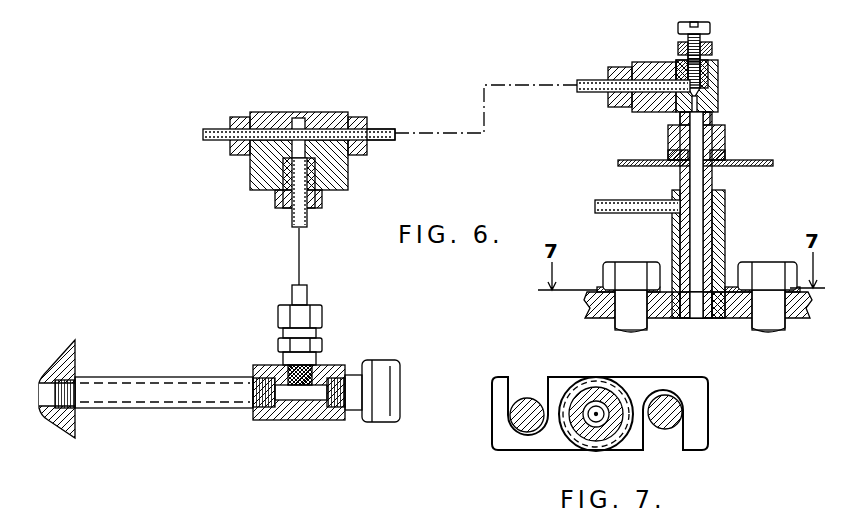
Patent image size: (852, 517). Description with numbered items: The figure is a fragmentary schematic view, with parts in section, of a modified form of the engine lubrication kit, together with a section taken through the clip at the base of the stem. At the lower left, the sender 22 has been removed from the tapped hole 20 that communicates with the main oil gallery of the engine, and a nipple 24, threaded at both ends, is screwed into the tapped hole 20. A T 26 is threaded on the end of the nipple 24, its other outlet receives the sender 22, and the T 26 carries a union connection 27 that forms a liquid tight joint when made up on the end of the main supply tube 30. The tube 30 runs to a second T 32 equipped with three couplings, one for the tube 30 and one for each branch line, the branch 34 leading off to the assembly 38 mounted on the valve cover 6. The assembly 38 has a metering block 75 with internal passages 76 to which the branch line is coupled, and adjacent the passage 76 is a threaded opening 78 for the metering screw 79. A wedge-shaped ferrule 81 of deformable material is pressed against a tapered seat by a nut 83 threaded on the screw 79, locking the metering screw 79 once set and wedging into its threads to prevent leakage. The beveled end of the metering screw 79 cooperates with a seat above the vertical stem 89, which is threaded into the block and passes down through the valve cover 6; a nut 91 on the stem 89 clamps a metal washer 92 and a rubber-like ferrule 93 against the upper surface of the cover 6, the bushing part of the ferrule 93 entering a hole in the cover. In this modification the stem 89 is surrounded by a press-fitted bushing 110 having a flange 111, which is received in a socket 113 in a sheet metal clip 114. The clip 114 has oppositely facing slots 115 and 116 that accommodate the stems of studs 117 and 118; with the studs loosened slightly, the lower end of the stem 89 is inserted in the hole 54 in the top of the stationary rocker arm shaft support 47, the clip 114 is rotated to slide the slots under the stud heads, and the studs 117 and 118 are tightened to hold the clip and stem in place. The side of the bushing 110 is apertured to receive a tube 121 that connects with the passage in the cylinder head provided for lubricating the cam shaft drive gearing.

In FIG. 6, the valve cover 6 is at (770, 160).
In FIG. 6, the tapped hole 20 is at (72, 357).
In FIG. 6, the sender 22 is at (370, 360).
In FIG. 6, the nipple 24 is at (181, 376).
In FIG. 6, the T 26 is at (284, 420).
In FIG. 6, the union connection 27 is at (322, 312).
In FIG. 6, the main supply tube 30 is at (307, 288).
In FIG. 6, the T 32 is at (310, 112).
In FIG. 6, the branch line 34 is at (378, 129).
In FIG. 6, the assembly 38 is at (736, 92).
In FIG. 6, the stationary rocker arm shaft support 47 is at (588, 318).
In FIG. 6, the hole 54 is at (680, 314).
In FIG. 6, the metering block 75 is at (640, 62).
In FIG. 6, the internal passages 76 is at (680, 62).
In FIG. 6, the threaded opening 78 is at (708, 68).
In FIG. 6, the metering screw 79 is at (700, 24).
In FIG. 6, the ferrule 81 is at (702, 58).
In FIG. 6, the nut 83 is at (712, 48).
In FIG. 6, the stem 89 is at (680, 172).
In FIG. 7, the stem 89 is at (593, 392).
In FIG. 6, the nut 91 is at (725, 134).
In FIG. 6, the metal washer 92 is at (726, 156).
In FIG. 6, the ferrule 93 is at (670, 156).
In FIG. 6, the bushing 110 is at (725, 230).
In FIG. 7, the bushing 110 is at (606, 395).
In FIG. 6, the flange 111 is at (727, 314).
In FIG. 6, the socket 113 is at (728, 288).
In FIG. 7, the socket 113 is at (578, 428).
In FIG. 6, the sheet metal clip 114 is at (598, 289).
In FIG. 7, the sheet metal clip 114 is at (511, 450).
In FIG. 7, the slot 115 is at (550, 380).
In FIG. 7, the slot 116 is at (645, 450).
In FIG. 6, the stud 117 is at (605, 266).
In FIG. 6, the stud 118 is at (790, 254).
In FIG. 6, the tube 121 is at (628, 214).